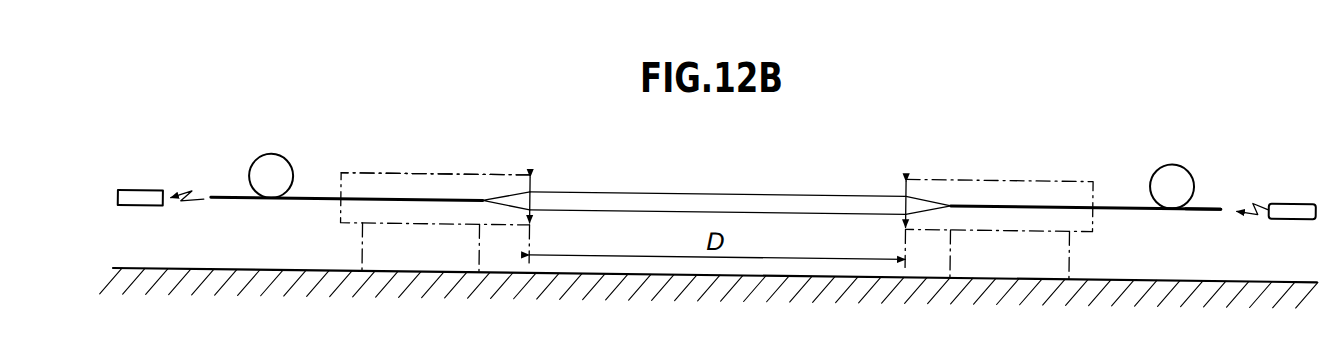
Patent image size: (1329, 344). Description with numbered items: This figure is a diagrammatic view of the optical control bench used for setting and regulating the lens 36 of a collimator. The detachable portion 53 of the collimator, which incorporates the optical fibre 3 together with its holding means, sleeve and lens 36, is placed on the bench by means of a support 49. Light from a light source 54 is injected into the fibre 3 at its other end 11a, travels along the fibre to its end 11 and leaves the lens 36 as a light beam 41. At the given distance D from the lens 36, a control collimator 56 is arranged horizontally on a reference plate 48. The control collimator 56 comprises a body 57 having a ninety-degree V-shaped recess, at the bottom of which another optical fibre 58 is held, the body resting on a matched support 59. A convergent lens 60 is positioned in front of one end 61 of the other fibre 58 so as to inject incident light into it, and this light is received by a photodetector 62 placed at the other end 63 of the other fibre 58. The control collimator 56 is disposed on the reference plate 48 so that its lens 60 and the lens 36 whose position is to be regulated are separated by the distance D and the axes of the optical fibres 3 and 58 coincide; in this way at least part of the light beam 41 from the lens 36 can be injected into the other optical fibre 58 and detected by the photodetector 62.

The optical fibre 3 is at (1111, 195).
The fibre end 11 is at (950, 195).
The other end of the fibre 11a is at (1219, 195).
The lens 36 is at (905, 173).
The light beam 41 is at (722, 186).
The reference plate 48 is at (178, 268).
The support 49 is at (1070, 250).
The detachable portion of the collimator 53 is at (1012, 157).
The light source 54 is at (1290, 190).
The control collimator 56 is at (411, 152).
The body 57 is at (450, 170).
The other optical fibre 58 is at (306, 194).
The matched support 59 is at (362, 249).
The convergent lens 60 is at (531, 177).
The end of the other fibre 61 is at (484, 195).
The photodetector 62 is at (135, 190).
The other end of the other fibre 63 is at (210, 195).